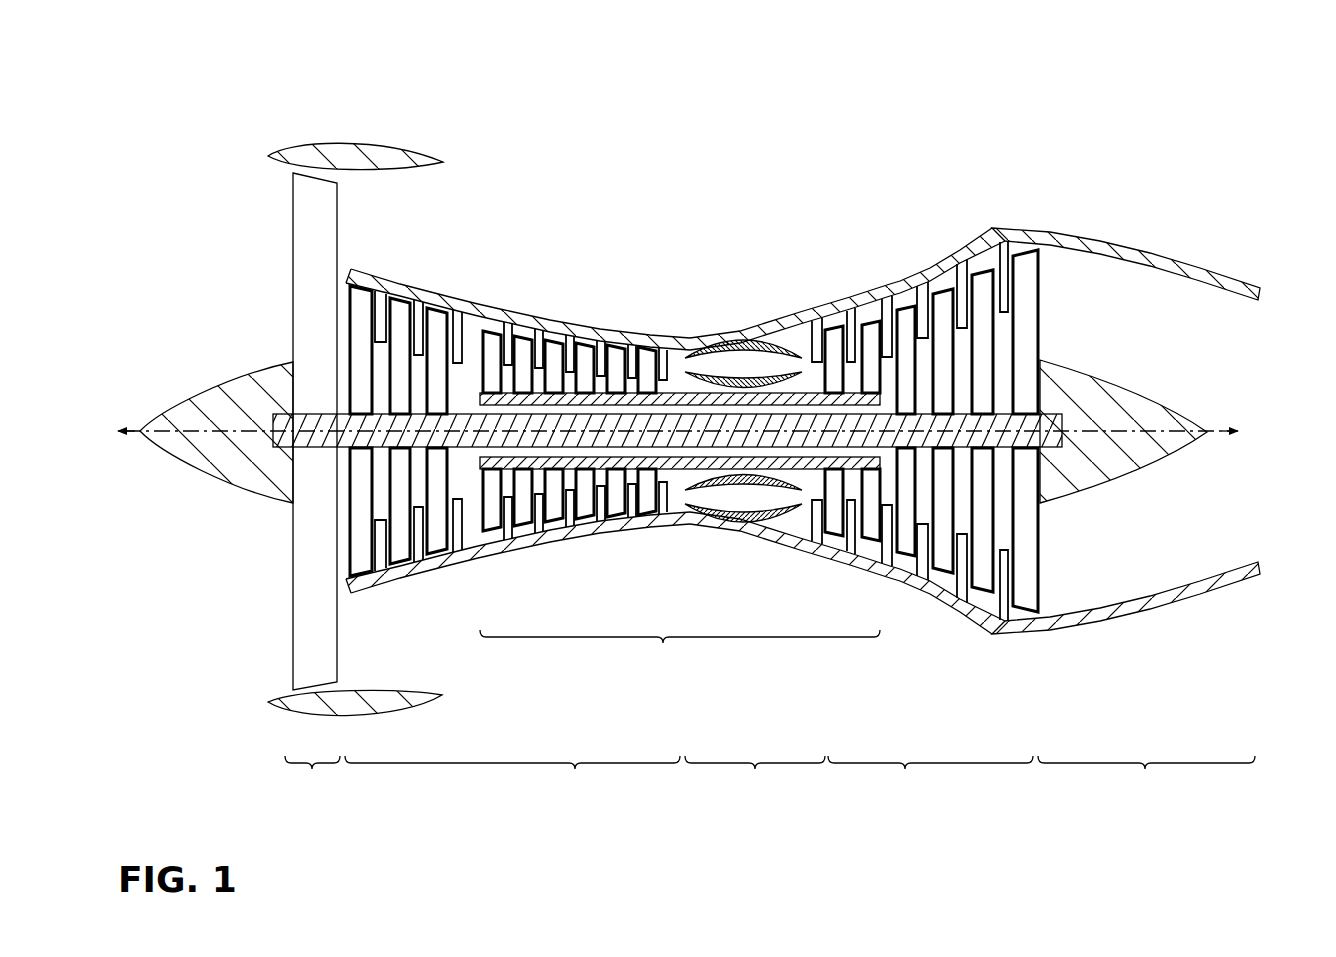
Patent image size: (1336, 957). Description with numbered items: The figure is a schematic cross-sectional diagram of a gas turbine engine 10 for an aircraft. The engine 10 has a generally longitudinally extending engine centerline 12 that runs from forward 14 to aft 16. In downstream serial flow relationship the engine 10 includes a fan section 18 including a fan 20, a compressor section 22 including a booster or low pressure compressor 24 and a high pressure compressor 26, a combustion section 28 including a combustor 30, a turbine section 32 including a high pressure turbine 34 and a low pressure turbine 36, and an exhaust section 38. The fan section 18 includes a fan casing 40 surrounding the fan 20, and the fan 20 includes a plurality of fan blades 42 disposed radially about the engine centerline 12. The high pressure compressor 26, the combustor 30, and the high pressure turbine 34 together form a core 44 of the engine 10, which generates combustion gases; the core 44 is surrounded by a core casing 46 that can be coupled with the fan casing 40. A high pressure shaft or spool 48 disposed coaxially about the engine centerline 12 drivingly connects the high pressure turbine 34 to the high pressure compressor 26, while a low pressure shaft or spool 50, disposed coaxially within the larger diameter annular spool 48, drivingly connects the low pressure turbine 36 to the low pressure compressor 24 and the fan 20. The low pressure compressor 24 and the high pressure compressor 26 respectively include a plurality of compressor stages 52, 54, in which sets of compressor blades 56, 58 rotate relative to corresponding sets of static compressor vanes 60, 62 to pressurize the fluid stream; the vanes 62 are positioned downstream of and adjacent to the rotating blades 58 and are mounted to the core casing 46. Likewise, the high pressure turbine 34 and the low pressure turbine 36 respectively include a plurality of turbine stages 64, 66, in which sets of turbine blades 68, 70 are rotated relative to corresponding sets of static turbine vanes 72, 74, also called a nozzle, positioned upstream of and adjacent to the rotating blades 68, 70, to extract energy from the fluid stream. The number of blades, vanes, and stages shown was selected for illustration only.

The gas turbine engine 10 is at (165, 83).
The engine centerline 12 is at (200, 431).
The forward 14 is at (109, 431).
The aft 16 is at (1249, 431).
The fan section 18 is at (325, 443).
The fan 20 is at (272, 431).
The compressor section 22 is at (802, 468).
The low pressure compressor 24 is at (438, 405).
The high pressure compressor 26 is at (575, 415).
The combustion section 28 is at (757, 519).
The combustor 30 is at (798, 340).
The turbine section 32 is at (919, 468).
The high pressure turbine 34 is at (846, 401).
The low pressure turbine 36 is at (964, 400).
The exhaust section 38 is at (1126, 516).
The fan casing 40 is at (357, 147).
The fan blades 42 is at (303, 636).
The core 44 is at (680, 651).
The core casing 46 is at (724, 335).
The HP shaft or spool 48 is at (680, 396).
The LP shaft or spool 50 is at (462, 413).
The compressor stages 52 is at (346, 261).
The compressor stages 54 is at (493, 297).
The low pressure compressor rotor blades 56 is at (362, 297).
The compressor blades 58 is at (494, 340).
The static compressor vanes 60 is at (383, 332).
The static compressor vanes 62 is at (512, 337).
The turbine stages 64 is at (838, 293).
The turbine stages 66 is at (962, 242).
The turbine blades 68 is at (865, 335).
The turbine blades 70 is at (984, 292).
The static turbine vanes 72 is at (852, 356).
The static turbine vanes 74 is at (968, 280).